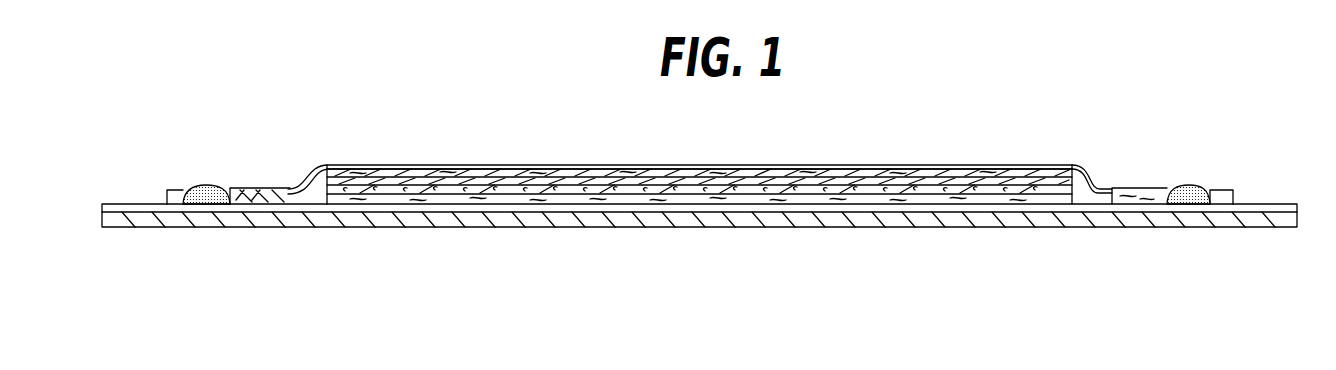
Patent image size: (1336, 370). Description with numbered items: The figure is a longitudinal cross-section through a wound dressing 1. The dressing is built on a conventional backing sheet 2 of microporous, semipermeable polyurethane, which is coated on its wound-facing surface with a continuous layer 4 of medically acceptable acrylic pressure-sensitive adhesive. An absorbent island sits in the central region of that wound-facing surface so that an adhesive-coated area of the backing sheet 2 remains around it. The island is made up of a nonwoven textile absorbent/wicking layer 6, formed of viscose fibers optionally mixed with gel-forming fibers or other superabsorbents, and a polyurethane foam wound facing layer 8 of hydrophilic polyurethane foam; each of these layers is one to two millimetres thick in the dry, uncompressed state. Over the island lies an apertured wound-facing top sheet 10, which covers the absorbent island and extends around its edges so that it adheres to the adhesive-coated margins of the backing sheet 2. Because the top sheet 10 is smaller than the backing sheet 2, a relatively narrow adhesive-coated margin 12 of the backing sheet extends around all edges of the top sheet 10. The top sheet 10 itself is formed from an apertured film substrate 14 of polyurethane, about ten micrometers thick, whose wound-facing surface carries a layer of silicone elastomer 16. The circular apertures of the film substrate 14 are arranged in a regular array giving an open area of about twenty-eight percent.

The wound dressing 1 is at (1168, 146).
The backing sheet 2 is at (1248, 228).
The continuous layer of acrylic pressure-sensitive adhesive 4 is at (1150, 208).
The absorbent/wicking layer 6 is at (1053, 200).
The polyurethane foam wound facing layer 8 is at (951, 168).
The apertured wound-facing top sheet 10 is at (1075, 163).
The adhesive-coated margin 12 is at (1283, 203).
The apertured film substrate 14 is at (843, 200).
The layer of silicone elastomer 16 is at (1040, 165).